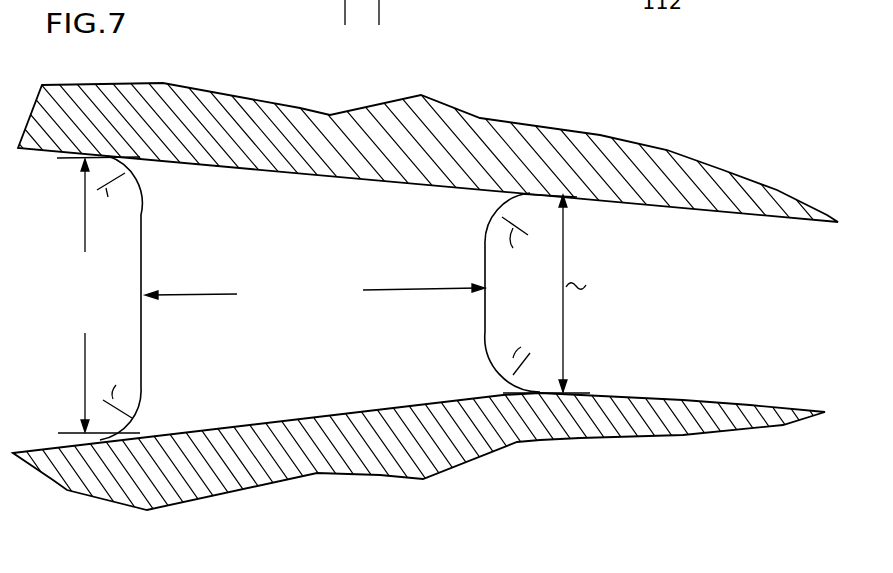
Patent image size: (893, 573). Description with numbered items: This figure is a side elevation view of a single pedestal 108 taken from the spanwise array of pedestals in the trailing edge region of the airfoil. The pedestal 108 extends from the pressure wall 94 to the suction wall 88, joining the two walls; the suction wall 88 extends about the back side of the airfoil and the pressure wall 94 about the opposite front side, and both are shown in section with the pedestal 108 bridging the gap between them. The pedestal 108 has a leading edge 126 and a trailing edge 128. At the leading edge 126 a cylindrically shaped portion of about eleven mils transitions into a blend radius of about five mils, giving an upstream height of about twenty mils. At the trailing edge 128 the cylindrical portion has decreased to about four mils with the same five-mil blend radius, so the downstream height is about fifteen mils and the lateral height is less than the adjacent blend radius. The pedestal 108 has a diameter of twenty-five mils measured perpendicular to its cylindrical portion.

The suction wall 88 is at (191, 100).
The pressure wall 94 is at (80, 478).
The pedestal 108 is at (304, 358).
The leading edge 126 is at (142, 273).
The trailing edge 128 is at (487, 307).